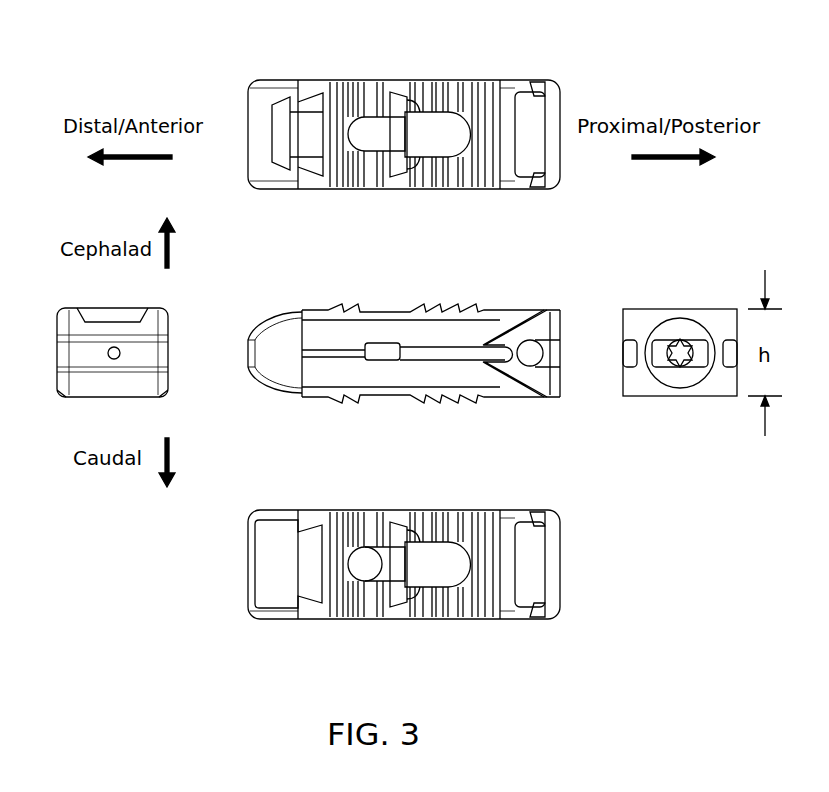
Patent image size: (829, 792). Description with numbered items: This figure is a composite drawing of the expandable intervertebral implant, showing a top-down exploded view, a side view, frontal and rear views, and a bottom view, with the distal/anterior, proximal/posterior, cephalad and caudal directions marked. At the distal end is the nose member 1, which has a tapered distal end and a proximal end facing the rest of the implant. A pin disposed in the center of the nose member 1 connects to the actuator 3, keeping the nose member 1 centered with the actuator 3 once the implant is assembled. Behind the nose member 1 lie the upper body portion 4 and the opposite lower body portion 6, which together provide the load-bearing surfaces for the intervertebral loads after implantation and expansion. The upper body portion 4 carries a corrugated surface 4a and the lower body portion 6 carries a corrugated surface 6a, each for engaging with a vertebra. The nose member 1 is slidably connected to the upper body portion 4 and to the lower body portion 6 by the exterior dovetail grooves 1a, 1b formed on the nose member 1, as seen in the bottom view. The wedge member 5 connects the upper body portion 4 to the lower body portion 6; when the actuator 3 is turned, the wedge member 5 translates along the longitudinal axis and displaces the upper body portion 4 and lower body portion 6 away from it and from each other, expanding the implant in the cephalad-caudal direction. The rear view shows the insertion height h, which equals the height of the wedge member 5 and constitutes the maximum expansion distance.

The nose member 1 is at (73, 350).
The exterior dovetail groove 1a is at (287, 530).
The exterior dovetail groove 1b is at (287, 602).
The actuator 3 is at (357, 128).
The upper body portion 4 is at (473, 330).
The corrugated surface 4a is at (426, 313).
The wedge member 5 is at (542, 375).
The lower body portion 6 is at (473, 375).
The corrugated surface 6a is at (426, 396).